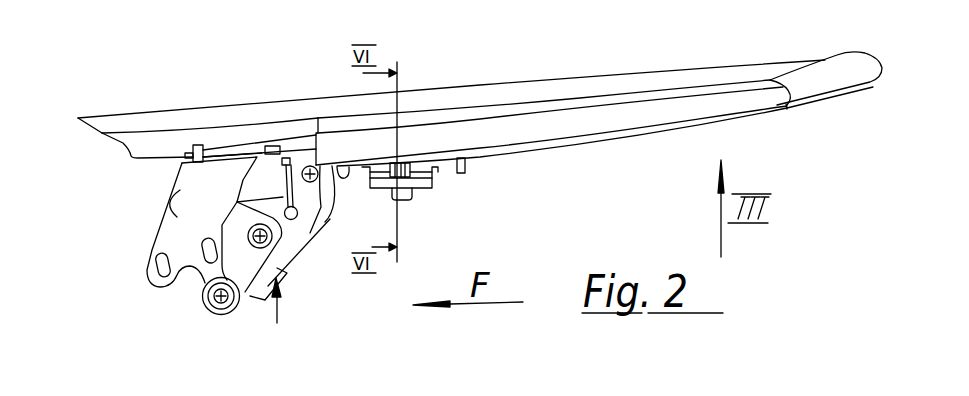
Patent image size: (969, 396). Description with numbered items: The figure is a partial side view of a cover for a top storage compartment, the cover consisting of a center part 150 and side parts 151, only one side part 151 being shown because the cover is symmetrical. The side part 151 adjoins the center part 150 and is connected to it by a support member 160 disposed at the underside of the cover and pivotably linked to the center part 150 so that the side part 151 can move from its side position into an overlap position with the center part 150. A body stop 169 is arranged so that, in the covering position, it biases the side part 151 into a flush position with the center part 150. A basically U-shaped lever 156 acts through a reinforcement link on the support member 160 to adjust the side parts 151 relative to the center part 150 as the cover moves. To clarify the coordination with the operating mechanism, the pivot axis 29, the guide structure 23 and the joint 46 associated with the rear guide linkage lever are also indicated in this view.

The center part 150 is at (501, 90).
The side part 151 is at (560, 122).
The support member 160 is at (430, 188).
The pivot axis 29 is at (327, 218).
The guide structure 23 is at (274, 242).
The body stop 169 is at (172, 221).
The joint 46 is at (223, 300).
The lever 156 is at (277, 323).